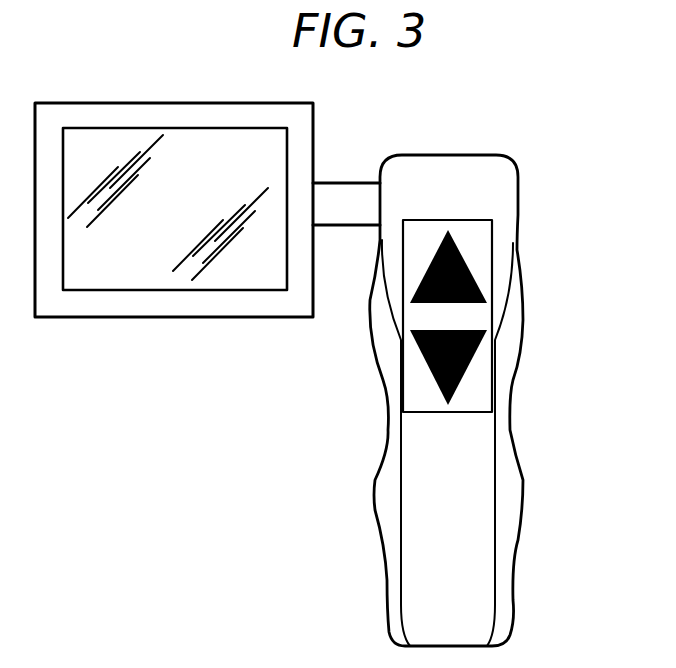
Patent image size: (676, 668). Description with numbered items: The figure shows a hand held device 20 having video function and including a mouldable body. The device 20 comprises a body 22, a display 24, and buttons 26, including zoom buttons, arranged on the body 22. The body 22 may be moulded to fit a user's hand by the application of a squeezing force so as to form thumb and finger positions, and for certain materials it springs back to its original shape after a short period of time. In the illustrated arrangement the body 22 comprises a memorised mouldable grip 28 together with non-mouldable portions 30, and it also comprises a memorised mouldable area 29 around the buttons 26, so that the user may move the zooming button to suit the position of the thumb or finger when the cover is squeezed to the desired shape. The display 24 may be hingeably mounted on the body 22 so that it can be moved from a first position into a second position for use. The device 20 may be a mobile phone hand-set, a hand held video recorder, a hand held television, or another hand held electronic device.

The device 20 is at (586, 154).
The body 22 is at (340, 440).
The display 24 is at (63, 305).
The buttons 26 is at (473, 273).
The memorised mouldable grip 28 is at (507, 622).
The memorised mouldable area 29 is at (480, 395).
The non-mouldable portions 30 is at (487, 558).